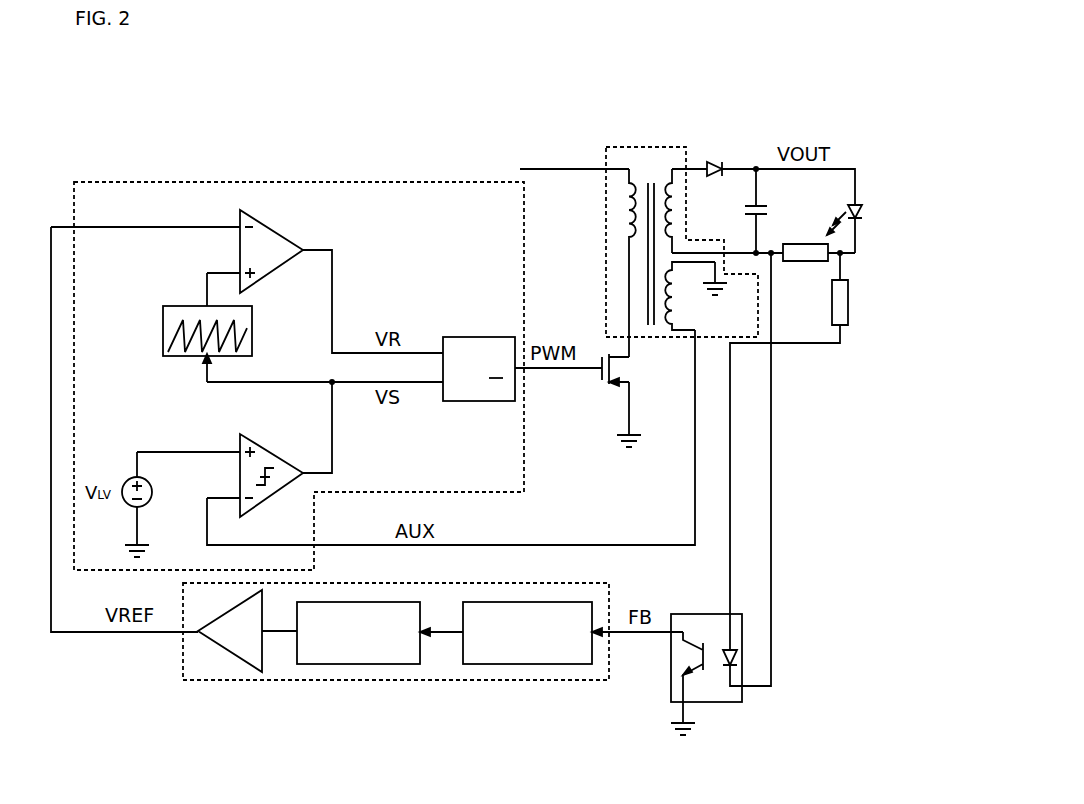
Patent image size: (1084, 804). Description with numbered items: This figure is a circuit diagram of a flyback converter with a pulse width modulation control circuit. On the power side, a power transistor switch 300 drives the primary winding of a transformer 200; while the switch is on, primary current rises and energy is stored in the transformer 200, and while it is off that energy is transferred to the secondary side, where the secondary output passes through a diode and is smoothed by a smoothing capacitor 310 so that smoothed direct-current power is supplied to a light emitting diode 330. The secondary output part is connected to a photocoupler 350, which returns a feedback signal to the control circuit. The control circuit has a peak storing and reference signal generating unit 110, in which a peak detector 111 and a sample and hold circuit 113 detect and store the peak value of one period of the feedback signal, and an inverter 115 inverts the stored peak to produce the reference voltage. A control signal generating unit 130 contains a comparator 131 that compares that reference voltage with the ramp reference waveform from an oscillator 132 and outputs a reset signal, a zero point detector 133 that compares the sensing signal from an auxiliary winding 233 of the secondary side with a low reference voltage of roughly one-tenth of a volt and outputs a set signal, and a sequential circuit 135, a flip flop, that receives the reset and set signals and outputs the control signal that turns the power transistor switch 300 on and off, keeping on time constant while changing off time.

The peak storing and reference signal generating unit 110 is at (454, 681).
The peak detector 111 is at (528, 664).
The sample and hold circuit 113 is at (353, 664).
The inverter 115 is at (243, 672).
The PWM control signal generating unit 130 is at (302, 182).
The PWM comparator 131 is at (272, 226).
The oscillator 132 is at (163, 318).
The zero point detector 133 is at (240, 440).
The sequential circuit 135 is at (478, 337).
The transformer 200 is at (643, 147).
The auxiliary winding 233 is at (680, 298).
The power transistor switch 300 is at (630, 372).
The smoothing capacitor 310 is at (768, 212).
The LED 330 is at (866, 212).
The photocoupler 350 is at (718, 702).